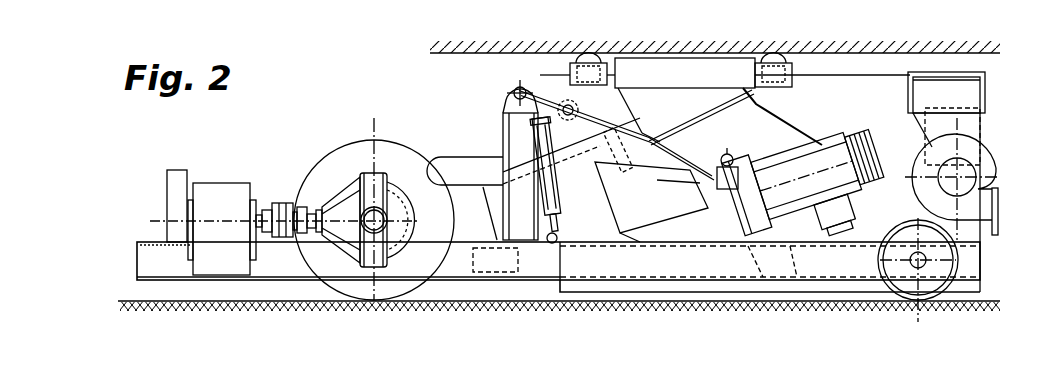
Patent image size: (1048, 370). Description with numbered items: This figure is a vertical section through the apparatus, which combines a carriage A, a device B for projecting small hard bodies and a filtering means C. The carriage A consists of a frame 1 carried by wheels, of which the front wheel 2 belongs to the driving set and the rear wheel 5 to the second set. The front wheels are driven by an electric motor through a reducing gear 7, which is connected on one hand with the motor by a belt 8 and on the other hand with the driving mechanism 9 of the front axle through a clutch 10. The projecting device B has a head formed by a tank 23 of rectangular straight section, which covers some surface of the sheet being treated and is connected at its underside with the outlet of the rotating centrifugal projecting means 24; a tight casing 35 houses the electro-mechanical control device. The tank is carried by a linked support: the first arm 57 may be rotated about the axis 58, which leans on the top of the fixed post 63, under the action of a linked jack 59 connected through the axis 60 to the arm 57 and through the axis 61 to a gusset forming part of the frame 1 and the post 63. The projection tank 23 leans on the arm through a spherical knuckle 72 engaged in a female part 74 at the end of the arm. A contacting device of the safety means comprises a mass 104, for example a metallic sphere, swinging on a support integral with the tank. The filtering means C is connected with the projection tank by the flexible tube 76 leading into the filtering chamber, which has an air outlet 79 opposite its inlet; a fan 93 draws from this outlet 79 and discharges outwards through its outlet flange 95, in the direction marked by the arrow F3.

The frame 1 is at (137, 260).
The wheel 2 is at (353, 142).
The wheel 5 is at (930, 304).
The reducing gear 7 is at (218, 184).
The belt 8 is at (170, 180).
The driving mechanism 9 is at (334, 200).
The clutch 10 is at (293, 236).
The tank 23 is at (724, 120).
The rotating projecting means 24 is at (778, 270).
The screen support 35 is at (662, 218).
The first arm 57 is at (633, 178).
The axis 58 is at (511, 91).
The linked jack 59 is at (573, 196).
The axis 60 is at (566, 104).
The axis 61 is at (558, 239).
The fixed post 63 is at (505, 132).
The spherical knuckle 72 is at (739, 156).
The female part 74 is at (736, 193).
The flexible tube 76 is at (451, 156).
The outlet 79 is at (977, 124).
The fan 93 is at (984, 150).
The outlet flange 95 is at (998, 226).
The mass 104 is at (584, 61).
The carriage A is at (262, 274).
The device for projecting small hard bodies B is at (680, 92).
The filtering means C is at (886, 90).
The view direction arrow F3 is at (1024, 168).